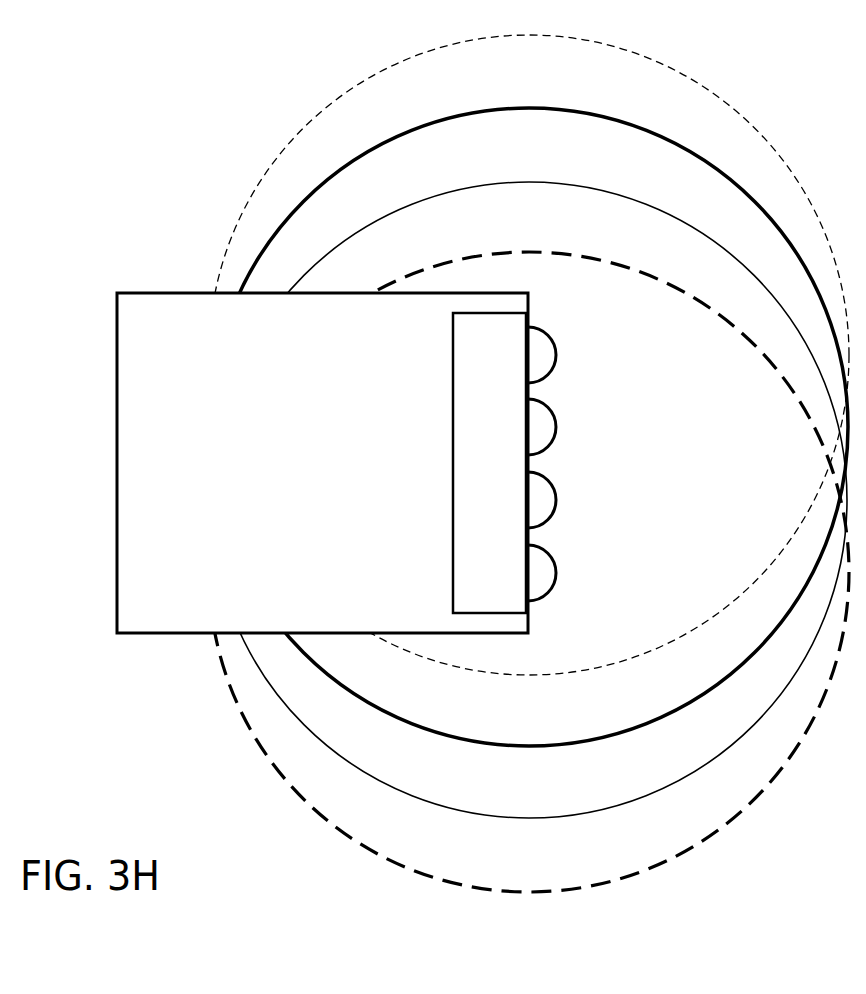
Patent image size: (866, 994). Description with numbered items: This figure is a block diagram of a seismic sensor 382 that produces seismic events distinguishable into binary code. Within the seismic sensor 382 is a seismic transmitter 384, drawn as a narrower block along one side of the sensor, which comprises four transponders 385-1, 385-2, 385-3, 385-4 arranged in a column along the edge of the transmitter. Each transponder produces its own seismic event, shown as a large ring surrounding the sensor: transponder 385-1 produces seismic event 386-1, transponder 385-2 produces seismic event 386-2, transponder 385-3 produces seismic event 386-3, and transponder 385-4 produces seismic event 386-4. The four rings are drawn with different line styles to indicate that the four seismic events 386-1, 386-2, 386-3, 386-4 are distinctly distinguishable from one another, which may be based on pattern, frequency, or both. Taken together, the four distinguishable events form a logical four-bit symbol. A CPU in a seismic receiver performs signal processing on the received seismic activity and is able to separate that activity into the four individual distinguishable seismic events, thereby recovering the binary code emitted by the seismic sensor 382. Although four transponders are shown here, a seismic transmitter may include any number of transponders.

The seismic sensor 382 is at (347, 503).
The seismic transmitter 384 is at (516, 477).
The transponder 385-1 is at (557, 354).
The transponder 385-2 is at (557, 427).
The transponder 385-3 is at (557, 500).
The transponder 385-4 is at (557, 573).
The seismic event 386-1 is at (530, 37).
The seismic event 386-2 is at (530, 110).
The seismic event 386-3 is at (523, 817).
The seismic event 386-4 is at (535, 891).